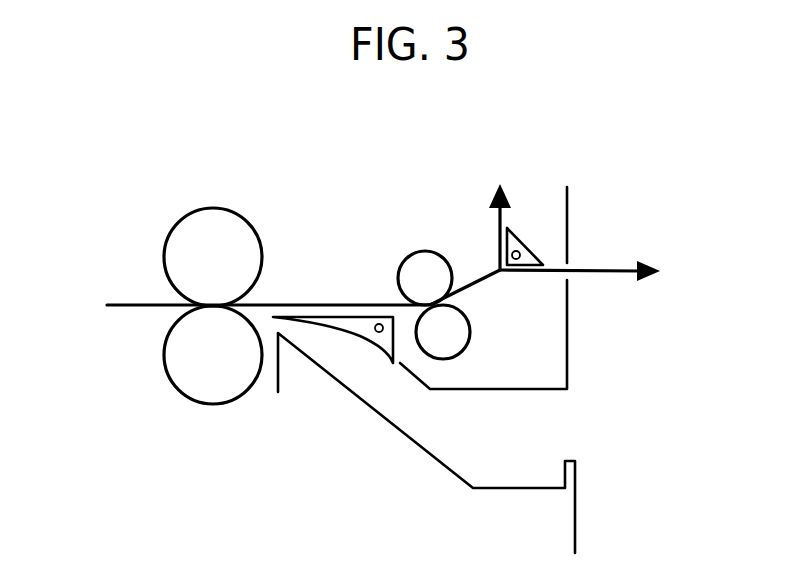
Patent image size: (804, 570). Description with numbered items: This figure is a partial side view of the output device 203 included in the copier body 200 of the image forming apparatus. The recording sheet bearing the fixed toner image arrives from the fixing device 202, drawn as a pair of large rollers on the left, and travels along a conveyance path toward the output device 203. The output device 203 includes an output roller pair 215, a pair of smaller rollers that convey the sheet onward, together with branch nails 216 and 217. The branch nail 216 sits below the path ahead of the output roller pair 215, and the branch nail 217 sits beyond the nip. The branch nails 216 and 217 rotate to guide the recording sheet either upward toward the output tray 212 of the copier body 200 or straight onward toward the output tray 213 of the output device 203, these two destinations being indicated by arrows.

The copier body 200 is at (548, 116).
The fixing device 202 is at (174, 332).
The output device 203 is at (439, 194).
The output tray 212 is at (503, 213).
The output tray 213 is at (603, 273).
The output roller pair 215 is at (442, 277).
The branch nail 216 is at (361, 322).
The branch nail 217 is at (511, 242).